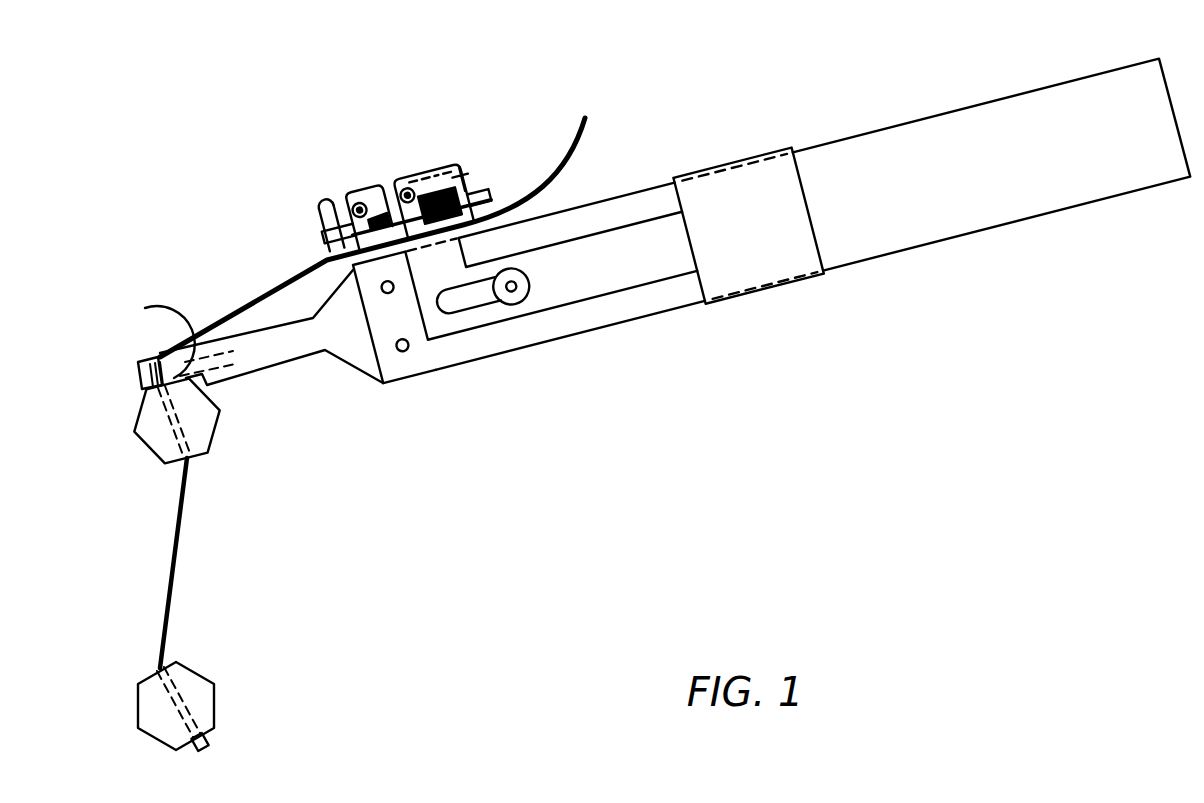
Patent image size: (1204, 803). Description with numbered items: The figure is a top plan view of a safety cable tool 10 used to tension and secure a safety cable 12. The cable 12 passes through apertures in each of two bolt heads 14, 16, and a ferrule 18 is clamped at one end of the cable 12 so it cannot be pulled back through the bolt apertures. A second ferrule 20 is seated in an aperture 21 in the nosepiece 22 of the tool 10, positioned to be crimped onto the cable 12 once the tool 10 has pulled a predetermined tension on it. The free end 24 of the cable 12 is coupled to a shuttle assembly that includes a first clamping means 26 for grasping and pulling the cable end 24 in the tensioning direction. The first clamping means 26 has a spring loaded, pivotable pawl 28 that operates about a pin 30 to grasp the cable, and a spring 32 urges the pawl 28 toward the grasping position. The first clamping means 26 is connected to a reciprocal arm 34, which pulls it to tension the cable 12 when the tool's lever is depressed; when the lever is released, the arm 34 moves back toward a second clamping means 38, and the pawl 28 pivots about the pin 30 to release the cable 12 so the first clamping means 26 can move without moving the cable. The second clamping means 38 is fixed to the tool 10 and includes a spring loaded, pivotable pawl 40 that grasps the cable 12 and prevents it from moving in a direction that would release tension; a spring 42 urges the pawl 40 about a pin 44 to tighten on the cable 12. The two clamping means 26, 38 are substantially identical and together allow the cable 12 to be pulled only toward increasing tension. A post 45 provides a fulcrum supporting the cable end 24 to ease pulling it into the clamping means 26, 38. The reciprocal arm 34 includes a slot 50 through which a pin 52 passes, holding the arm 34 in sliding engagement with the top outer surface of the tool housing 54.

The safety cable tool 10 is at (940, 82).
The safety cable 12 is at (177, 550).
The bolt head 14 is at (205, 690).
The bolt head 16 is at (200, 440).
The ferrule 18 is at (212, 740).
The second ferrule 20 is at (140, 372).
The aperture 21 is at (146, 308).
The nosepiece 22 is at (293, 353).
The free end 24 is at (590, 120).
The first clamping means 26 is at (425, 172).
The pawl 28 is at (418, 182).
The pin 30 is at (405, 185).
The spring 32 is at (462, 177).
The reciprocal arm 34 is at (587, 292).
The second clamping means 38 is at (362, 200).
The pawl 40 is at (325, 223).
The spring 42 is at (328, 240).
The pin 44 is at (350, 192).
The post 45 is at (320, 212).
The slot 50 is at (458, 300).
The pin 52 is at (514, 300).
The tool housing 54 is at (660, 300).